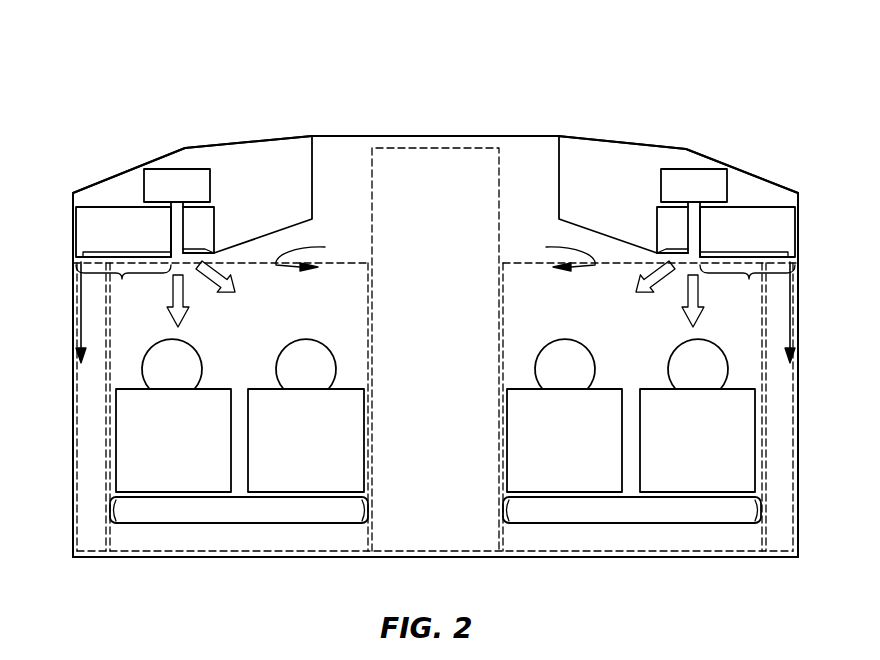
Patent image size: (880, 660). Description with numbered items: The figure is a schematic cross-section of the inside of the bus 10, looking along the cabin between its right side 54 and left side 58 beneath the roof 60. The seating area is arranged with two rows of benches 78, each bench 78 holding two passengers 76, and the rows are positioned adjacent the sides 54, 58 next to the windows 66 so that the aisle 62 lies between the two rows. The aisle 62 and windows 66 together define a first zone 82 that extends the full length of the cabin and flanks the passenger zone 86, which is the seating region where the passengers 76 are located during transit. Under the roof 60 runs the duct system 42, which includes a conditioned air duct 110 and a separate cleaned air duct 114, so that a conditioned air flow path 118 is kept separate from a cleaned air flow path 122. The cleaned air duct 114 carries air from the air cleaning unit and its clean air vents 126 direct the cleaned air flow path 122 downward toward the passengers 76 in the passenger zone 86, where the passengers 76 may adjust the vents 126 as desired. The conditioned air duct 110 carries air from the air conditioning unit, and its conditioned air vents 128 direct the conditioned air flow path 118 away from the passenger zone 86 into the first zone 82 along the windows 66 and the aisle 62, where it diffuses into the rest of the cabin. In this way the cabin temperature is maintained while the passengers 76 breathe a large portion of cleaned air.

The bus 10 is at (653, 68).
The duct system 42 is at (128, 197).
The right side 54 is at (800, 518).
The left side 58 is at (73, 544).
The roof 60 is at (513, 136).
The aisle 62 is at (527, 545).
The windows 66 is at (73, 390).
The passengers 76 is at (161, 454).
The benches 78 is at (229, 507).
The first zone 82 is at (88, 533).
The passenger zone 86 is at (273, 533).
The conditioned air duct 110 is at (88, 223).
The cleaned air duct 114 is at (162, 177).
The conditioned air flow path 118 is at (81, 327).
The cleaned air flow path 122 is at (185, 312).
The clean air vents 126 is at (435, 282).
The conditioned air vents 128 is at (78, 255).